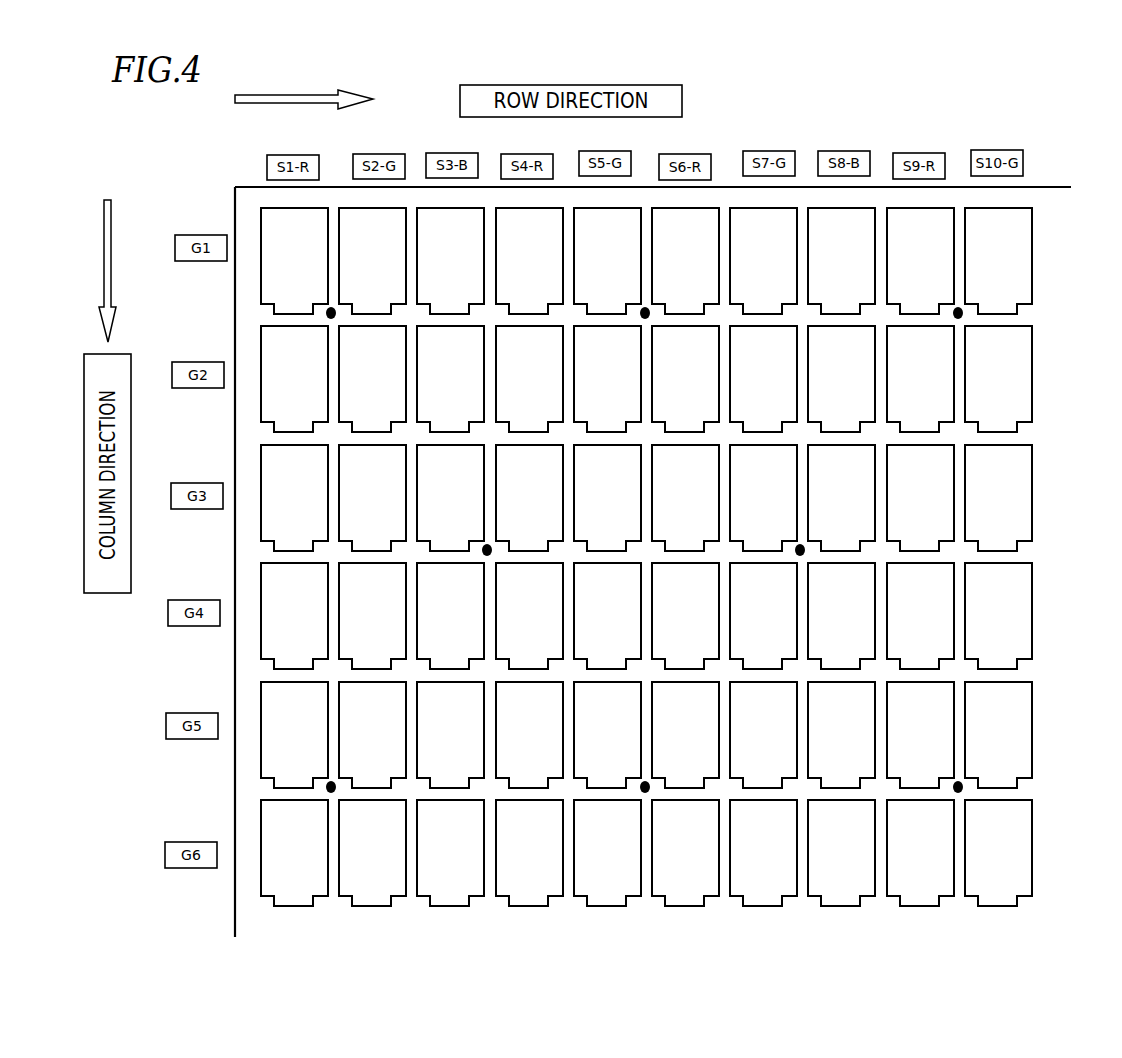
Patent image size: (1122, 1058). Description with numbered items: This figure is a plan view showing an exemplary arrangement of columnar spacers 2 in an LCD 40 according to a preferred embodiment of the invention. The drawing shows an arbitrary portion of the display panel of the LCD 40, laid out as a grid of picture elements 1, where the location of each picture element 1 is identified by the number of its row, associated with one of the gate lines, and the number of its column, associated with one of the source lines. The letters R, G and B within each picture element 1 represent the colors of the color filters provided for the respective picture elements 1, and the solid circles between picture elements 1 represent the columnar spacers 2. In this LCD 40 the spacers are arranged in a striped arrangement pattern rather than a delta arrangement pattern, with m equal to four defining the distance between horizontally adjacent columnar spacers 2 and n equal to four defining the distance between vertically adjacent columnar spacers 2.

The LCD 40 is at (1048, 145).
The picture element 1 is at (1026, 277).
The columnar spacer 2 is at (963, 315).